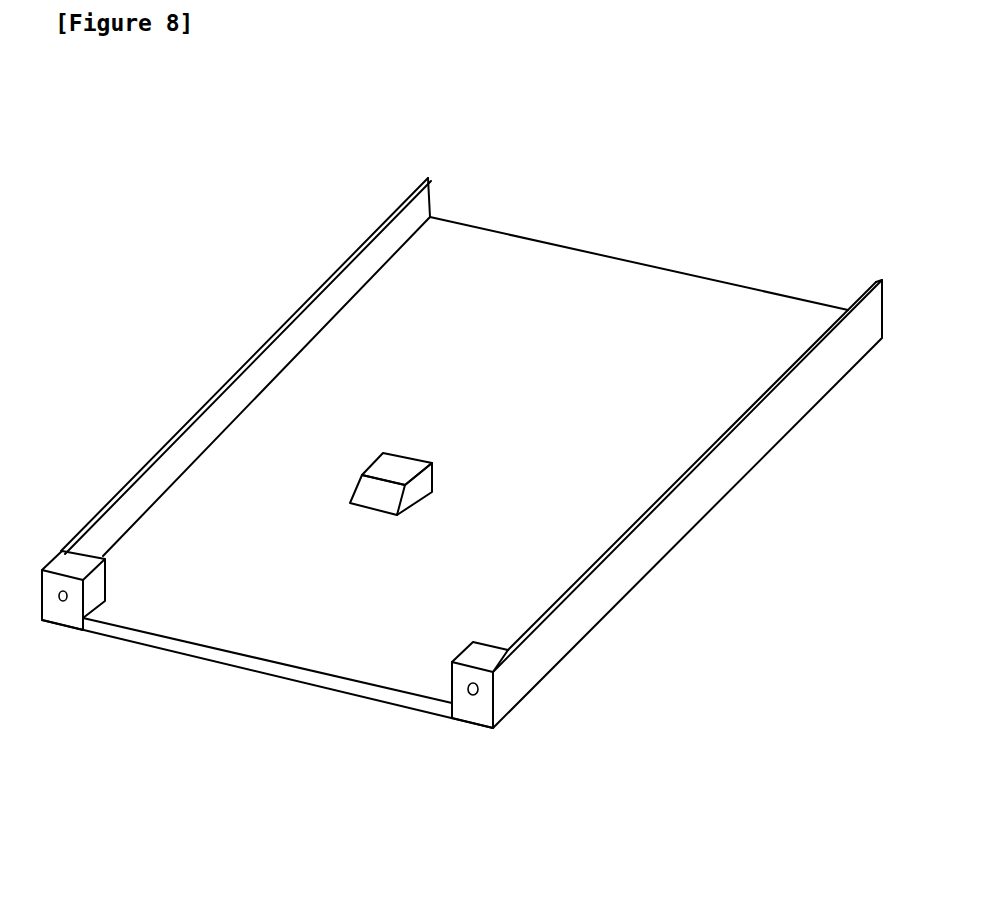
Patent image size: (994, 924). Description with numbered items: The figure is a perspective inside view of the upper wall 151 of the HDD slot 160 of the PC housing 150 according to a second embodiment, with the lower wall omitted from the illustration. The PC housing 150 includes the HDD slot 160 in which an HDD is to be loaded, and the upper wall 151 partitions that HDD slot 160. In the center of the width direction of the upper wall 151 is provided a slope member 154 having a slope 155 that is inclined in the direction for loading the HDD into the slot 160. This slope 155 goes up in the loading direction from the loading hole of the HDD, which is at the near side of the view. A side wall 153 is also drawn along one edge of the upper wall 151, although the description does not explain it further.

The PC housing 150 is at (461, 456).
The upper wall 151 is at (648, 267).
The side wall 153 is at (713, 483).
The slope member 154 is at (398, 468).
The slope 155 is at (375, 505).
The HDD slot 160 is at (233, 608).